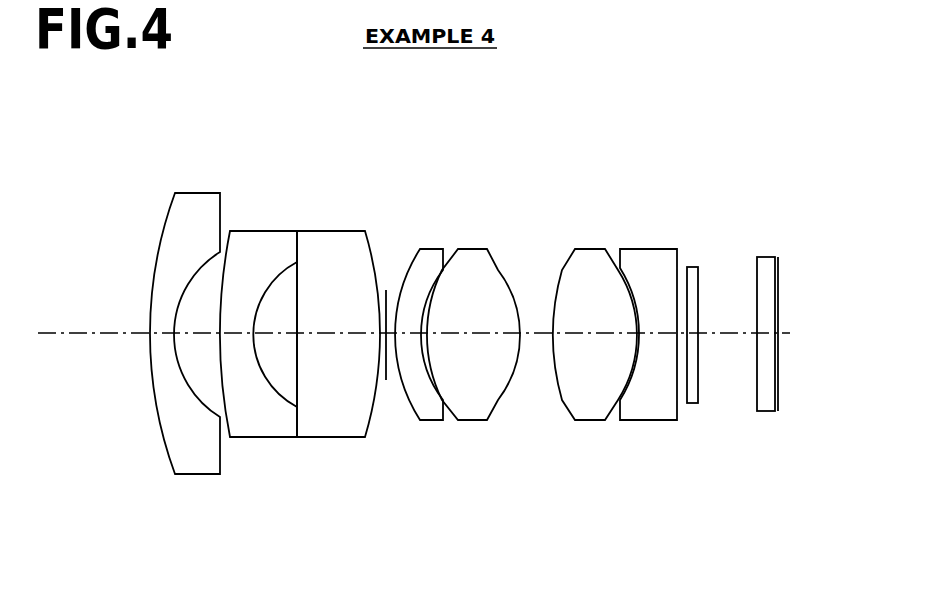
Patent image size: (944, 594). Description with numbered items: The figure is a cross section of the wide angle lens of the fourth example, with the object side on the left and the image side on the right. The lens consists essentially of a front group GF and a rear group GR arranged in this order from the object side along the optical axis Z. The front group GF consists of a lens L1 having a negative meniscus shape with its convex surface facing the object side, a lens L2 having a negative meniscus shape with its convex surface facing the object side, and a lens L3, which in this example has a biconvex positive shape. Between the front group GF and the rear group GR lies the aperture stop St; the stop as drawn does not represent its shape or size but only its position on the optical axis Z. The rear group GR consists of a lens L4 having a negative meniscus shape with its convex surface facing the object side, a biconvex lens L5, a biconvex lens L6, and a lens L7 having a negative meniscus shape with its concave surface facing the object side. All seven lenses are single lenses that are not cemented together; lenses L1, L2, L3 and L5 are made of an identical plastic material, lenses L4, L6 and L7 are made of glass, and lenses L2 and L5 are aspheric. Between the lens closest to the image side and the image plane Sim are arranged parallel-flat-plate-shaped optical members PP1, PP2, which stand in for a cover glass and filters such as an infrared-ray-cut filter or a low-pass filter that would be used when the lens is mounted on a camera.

The optical axis Z is at (62, 332).
The front group GF is at (352, 108).
The rear group GR is at (660, 143).
The lens L1 is at (198, 200).
The lens L2 is at (263, 237).
The lens L3 is at (335, 238).
The lens L4 is at (432, 257).
The lens L5 is at (482, 257).
The lens L6 is at (587, 257).
The lens L7 is at (645, 257).
The aperture stop St is at (388, 288).
The optical member PP1 is at (693, 266).
The optical member PP2 is at (765, 262).
The image plane Sim is at (776, 409).